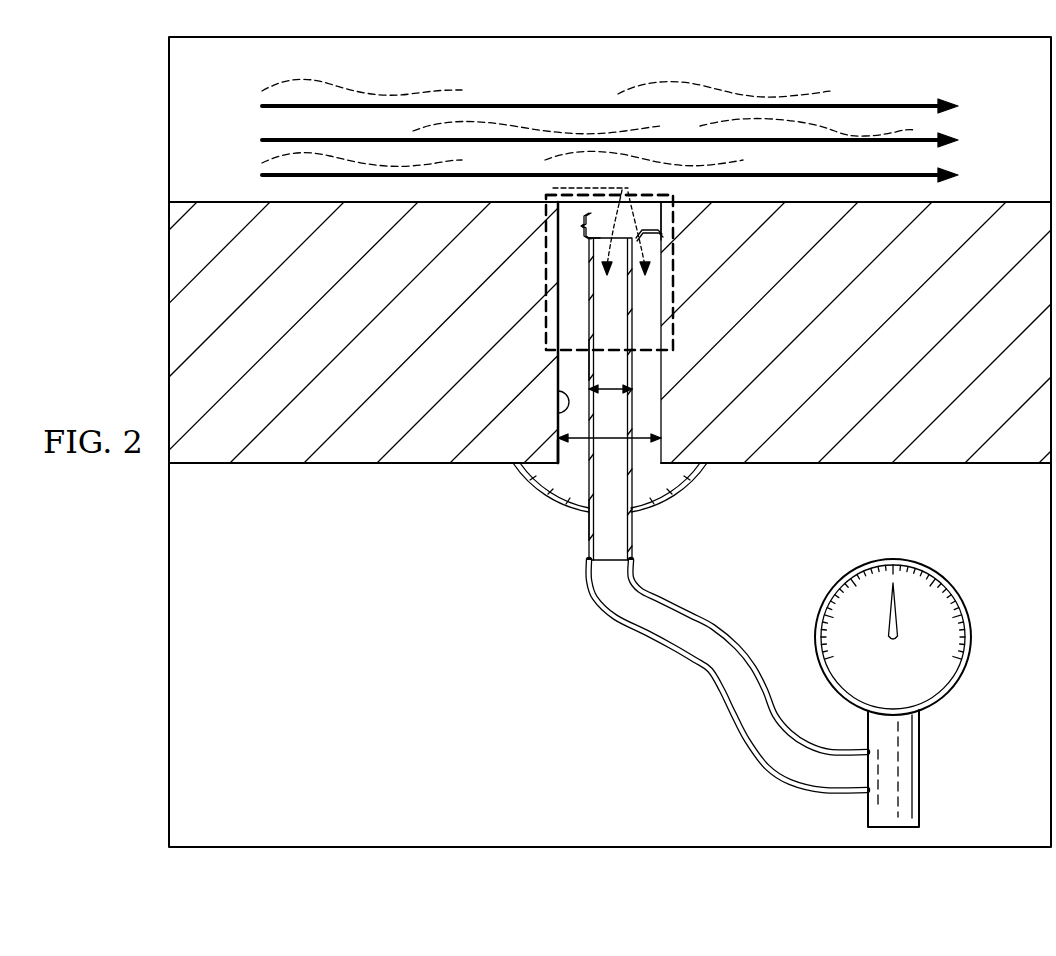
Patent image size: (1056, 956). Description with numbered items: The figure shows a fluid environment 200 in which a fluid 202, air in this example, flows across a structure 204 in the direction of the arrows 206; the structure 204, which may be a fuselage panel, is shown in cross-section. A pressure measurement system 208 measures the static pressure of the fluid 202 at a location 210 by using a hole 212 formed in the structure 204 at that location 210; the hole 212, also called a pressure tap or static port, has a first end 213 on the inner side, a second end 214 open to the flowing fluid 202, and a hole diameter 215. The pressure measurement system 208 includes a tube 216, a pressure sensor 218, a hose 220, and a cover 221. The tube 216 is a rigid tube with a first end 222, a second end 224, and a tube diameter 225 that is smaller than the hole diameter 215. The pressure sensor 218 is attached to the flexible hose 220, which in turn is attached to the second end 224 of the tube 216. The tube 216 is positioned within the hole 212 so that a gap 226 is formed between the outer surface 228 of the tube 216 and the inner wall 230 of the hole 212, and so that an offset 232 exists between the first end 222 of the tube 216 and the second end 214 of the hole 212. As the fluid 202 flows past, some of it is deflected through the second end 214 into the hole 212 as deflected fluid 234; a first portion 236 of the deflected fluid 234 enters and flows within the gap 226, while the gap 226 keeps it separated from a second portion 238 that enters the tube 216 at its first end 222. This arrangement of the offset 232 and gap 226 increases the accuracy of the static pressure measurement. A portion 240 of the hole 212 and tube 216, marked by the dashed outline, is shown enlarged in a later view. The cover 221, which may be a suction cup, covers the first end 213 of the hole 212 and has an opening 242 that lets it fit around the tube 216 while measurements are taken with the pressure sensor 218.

The fluid environment 200 is at (166, 157).
The fluid 202 is at (274, 82).
The structure 204 is at (345, 464).
The arrows 206 is at (882, 100).
The pressure measurement system 208 is at (792, 692).
The location 210 is at (645, 190).
The hole 212 is at (666, 344).
The first end 213 is at (552, 457).
The second end 214 is at (670, 207).
The hole diameter 215 is at (664, 438).
The tube 216 is at (632, 530).
The pressure sensor 218 is at (971, 640).
The hose 220 is at (677, 652).
The cover 221 is at (535, 492).
The first end 222 is at (583, 239).
The second end 224 is at (638, 562).
The tube diameter 225 is at (612, 386).
The gap 226 is at (662, 230).
The outer surface 228 is at (590, 360).
The inner wall 230 is at (566, 406).
The offset 232 is at (580, 225).
The deflected fluid 234 is at (553, 189).
The first portion 236 is at (652, 258).
The second portion 238 is at (592, 250).
The portion 240 is at (541, 316).
The opening 242 is at (584, 522).